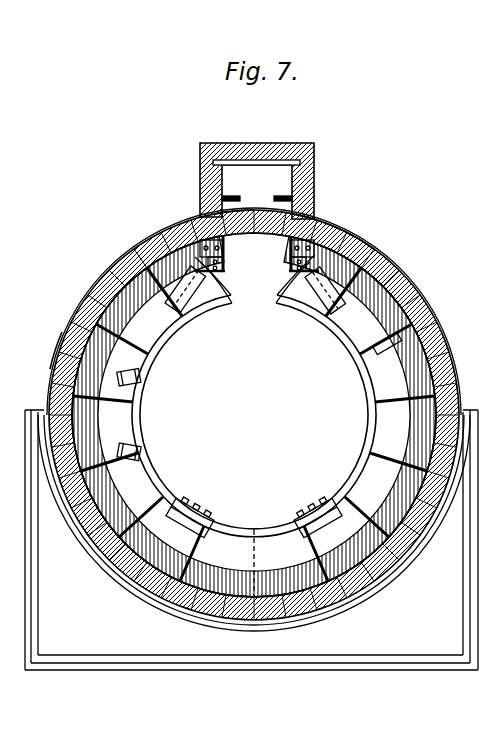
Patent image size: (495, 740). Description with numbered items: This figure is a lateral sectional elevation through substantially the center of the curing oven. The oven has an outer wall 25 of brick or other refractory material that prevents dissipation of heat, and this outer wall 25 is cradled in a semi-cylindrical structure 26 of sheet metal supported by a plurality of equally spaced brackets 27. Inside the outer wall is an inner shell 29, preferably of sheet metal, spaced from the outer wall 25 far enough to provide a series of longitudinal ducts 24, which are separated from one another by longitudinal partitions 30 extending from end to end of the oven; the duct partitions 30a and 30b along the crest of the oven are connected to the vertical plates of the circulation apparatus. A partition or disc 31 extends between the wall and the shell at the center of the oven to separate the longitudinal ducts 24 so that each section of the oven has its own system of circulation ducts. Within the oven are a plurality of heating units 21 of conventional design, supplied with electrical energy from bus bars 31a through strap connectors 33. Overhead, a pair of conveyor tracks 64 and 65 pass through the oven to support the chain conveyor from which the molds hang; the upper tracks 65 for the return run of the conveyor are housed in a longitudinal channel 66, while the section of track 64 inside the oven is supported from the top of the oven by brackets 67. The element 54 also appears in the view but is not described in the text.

The heating unit 21 is at (163, 333).
The longitudinal duct 24 is at (135, 262).
The outer wall 25 is at (396, 258).
The semi-cylindrical structure 26 is at (268, 622).
The bracket 27 is at (38, 599).
The inner shell 29 is at (318, 302).
The longitudinal partition 30 is at (84, 316).
The longitudinal duct partition 30a is at (204, 223).
The longitudinal duct partition 30b is at (368, 237).
The partition or disc 31 is at (118, 562).
The bus bar 31a is at (195, 512).
The strap connector 33 is at (128, 412).
The shell plate 54 is at (48, 288).
The overhead conveyor track 64 is at (287, 272).
The upper conveyor track 65 is at (278, 196).
The longitudinal channel 66 is at (314, 167).
The bracket 67 is at (290, 248).